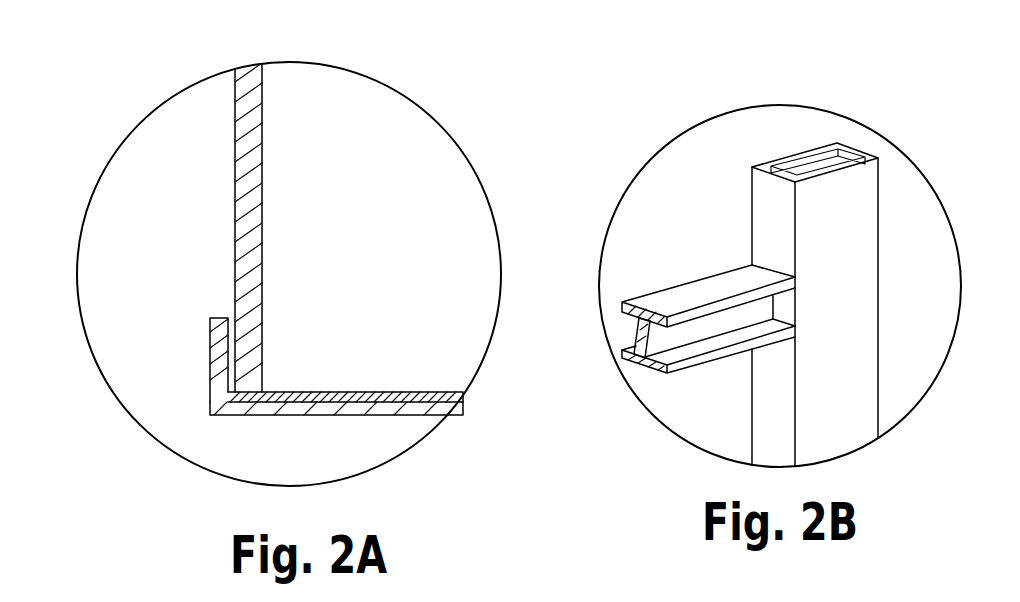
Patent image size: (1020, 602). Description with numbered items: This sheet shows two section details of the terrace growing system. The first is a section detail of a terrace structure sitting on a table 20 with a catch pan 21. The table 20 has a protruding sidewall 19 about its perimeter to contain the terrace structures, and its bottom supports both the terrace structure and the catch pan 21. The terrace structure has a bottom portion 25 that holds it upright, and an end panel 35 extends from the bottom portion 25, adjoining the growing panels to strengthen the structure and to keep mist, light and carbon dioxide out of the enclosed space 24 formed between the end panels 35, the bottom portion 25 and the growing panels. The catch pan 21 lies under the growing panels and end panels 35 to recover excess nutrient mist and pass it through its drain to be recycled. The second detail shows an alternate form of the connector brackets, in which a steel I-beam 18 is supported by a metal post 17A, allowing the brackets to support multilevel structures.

In FIG. 2B, the metal post 17A is at (810, 162).
In FIG. 2B, the I-beam 18 is at (646, 360).
In FIG. 2A, the protruding sidewall 19 is at (212, 355).
In FIG. 2A, the table 20 is at (298, 406).
In FIG. 2A, the catch pan 21 is at (367, 393).
In FIG. 2A, the enclosed space 24 is at (363, 157).
In FIG. 2A, the bottom portion 25 is at (390, 419).
In FIG. 2A, the end panel 35 is at (235, 210).